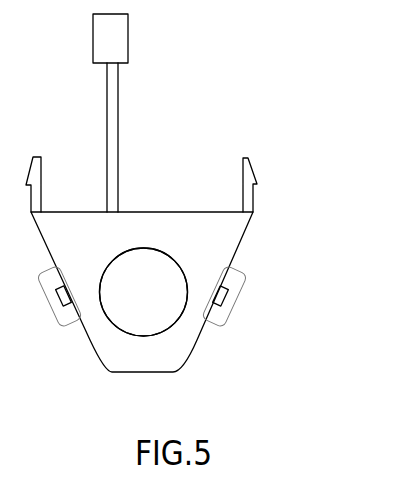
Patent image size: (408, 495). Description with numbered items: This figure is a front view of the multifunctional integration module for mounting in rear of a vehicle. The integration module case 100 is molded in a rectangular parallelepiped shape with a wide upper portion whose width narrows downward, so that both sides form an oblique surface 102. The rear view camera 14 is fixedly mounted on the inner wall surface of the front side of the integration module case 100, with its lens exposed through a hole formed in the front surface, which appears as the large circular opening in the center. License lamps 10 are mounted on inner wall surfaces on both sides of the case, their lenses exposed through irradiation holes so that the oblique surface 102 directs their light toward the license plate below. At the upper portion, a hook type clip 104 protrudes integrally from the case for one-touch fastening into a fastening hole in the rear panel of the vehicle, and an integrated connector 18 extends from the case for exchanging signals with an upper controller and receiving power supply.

The integration module case 100 is at (191, 209).
The oblique surface 102 is at (247, 230).
The hook type clip 104 is at (250, 176).
The integrated connector 18 is at (128, 38).
The license lamps 10 is at (227, 296).
The rear view camera 14 is at (113, 315).